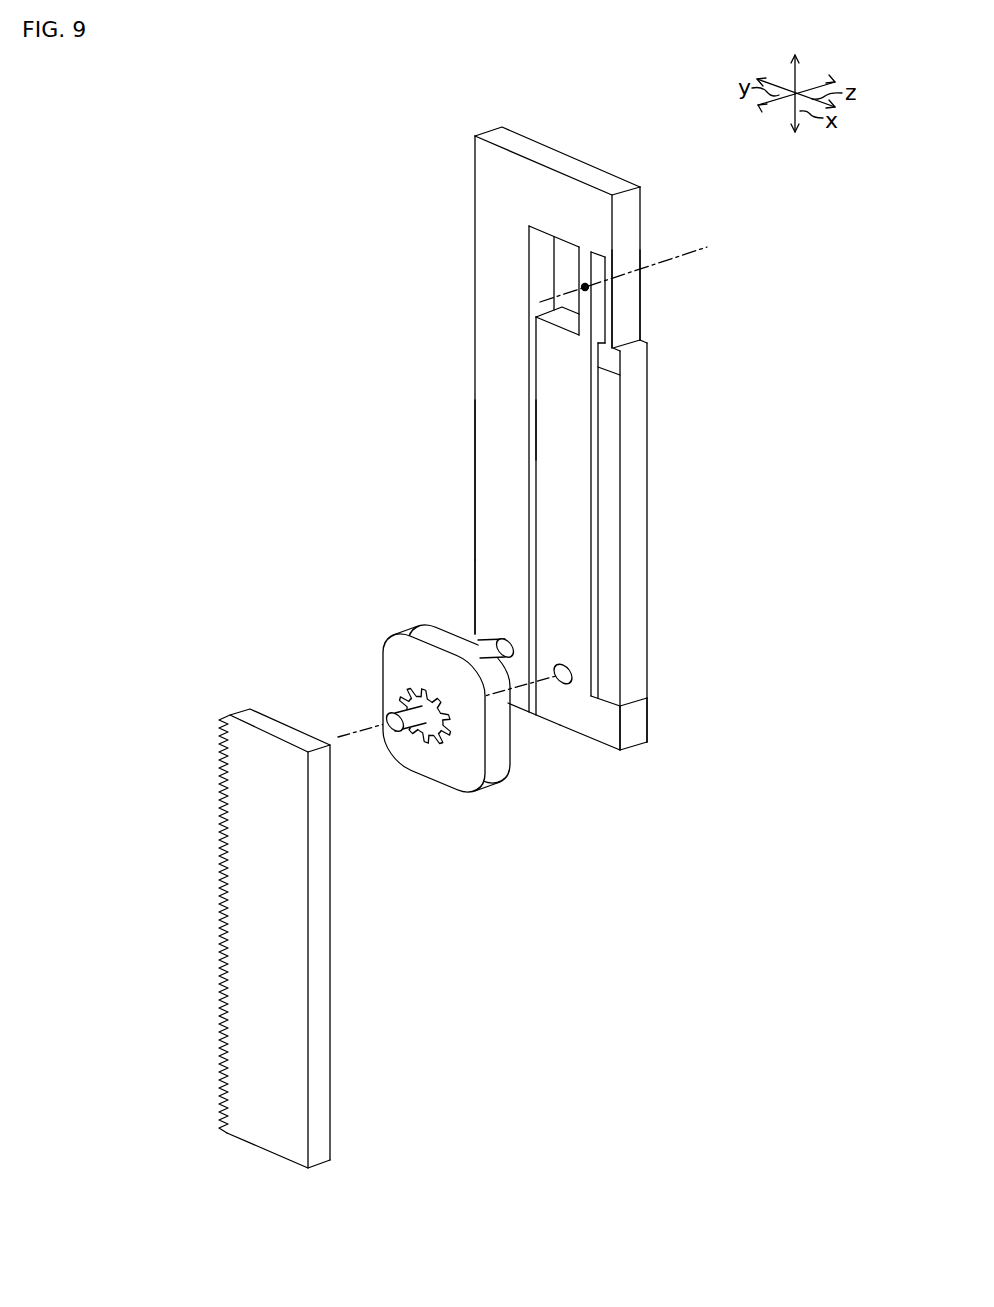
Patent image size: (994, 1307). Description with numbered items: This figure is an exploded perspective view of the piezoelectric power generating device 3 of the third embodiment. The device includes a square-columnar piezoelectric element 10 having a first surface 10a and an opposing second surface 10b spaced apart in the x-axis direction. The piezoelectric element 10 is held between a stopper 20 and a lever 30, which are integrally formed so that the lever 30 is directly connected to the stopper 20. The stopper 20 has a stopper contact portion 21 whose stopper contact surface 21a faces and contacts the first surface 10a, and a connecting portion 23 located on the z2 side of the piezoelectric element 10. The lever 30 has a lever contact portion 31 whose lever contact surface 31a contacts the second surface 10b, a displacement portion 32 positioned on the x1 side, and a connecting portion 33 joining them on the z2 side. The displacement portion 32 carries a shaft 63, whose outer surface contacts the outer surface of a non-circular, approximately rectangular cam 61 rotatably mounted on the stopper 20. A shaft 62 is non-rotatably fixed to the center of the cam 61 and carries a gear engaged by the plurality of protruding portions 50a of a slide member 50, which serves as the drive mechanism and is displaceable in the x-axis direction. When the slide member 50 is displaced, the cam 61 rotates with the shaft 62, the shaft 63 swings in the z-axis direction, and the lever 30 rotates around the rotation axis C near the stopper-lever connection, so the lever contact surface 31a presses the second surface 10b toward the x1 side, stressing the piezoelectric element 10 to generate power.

The piezoelectric power generating device 3 is at (603, 131).
The piezoelectric element 10 is at (650, 532).
The first surface 10a is at (607, 709).
The second surface 10b is at (630, 368).
The stopper 20 is at (534, 405).
The stopper contact portion 21 is at (650, 725).
The stopper contact surface 21a is at (638, 703).
The connecting portion 23 is at (535, 427).
The lever 30 is at (472, 323).
The lever contact portion 31 is at (643, 313).
The lever contact surface 31a is at (641, 372).
The displacement portion 32 is at (475, 612).
The connecting portion 33 is at (474, 468).
The slide member 50 is at (334, 963).
The protruding portions 50a is at (222, 967).
The cam 61 is at (509, 762).
The shaft 62 is at (438, 748).
The shaft 63 is at (494, 636).
The rotation axis C is at (682, 253).